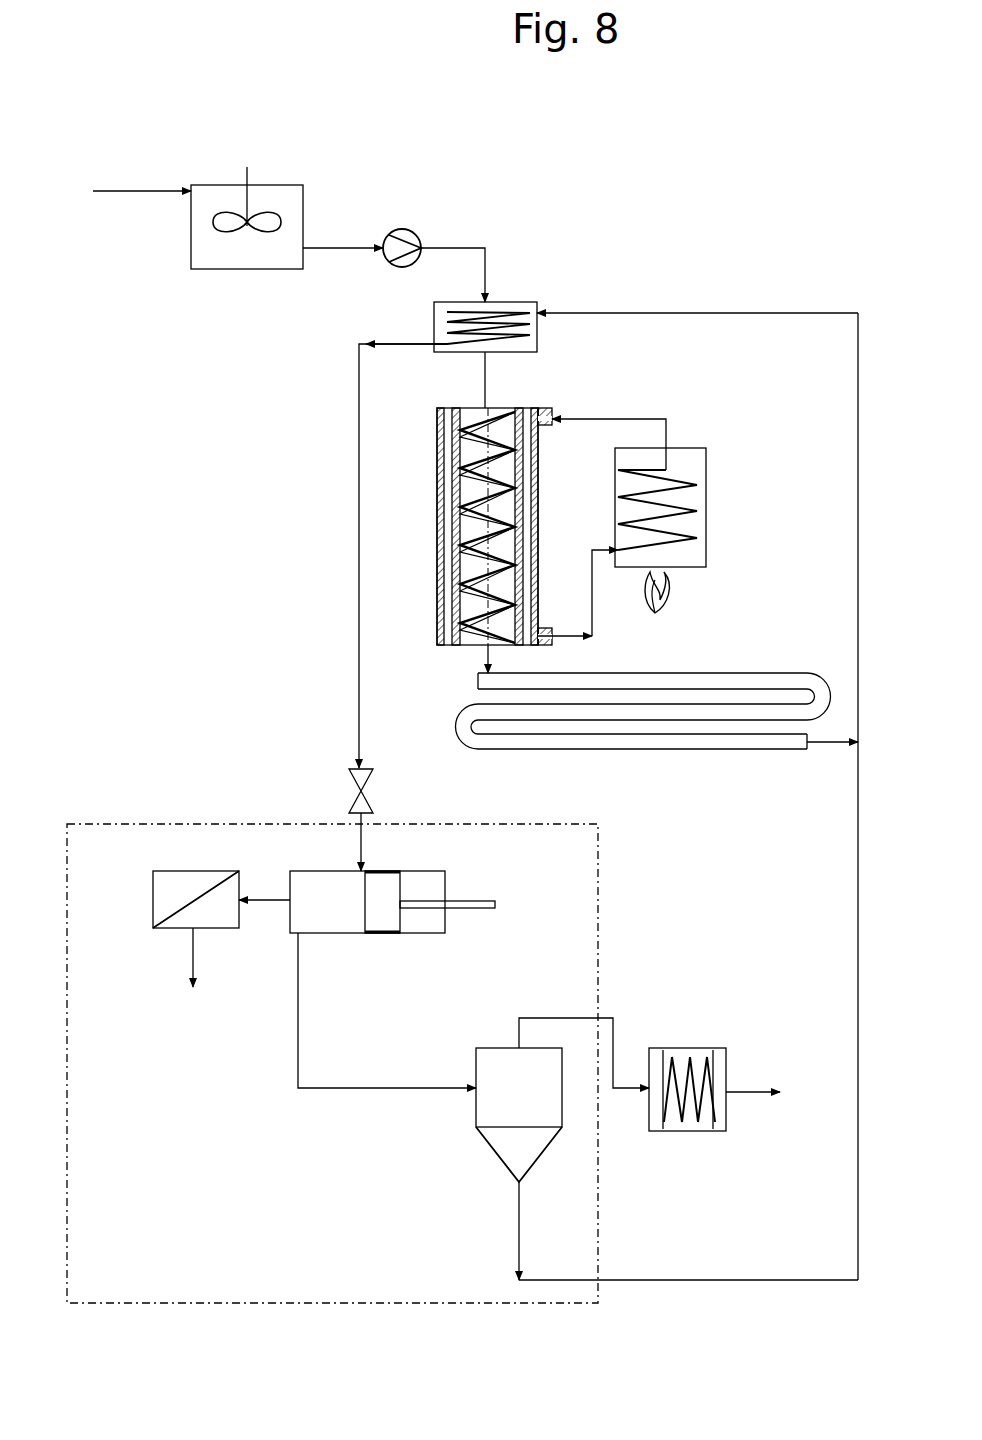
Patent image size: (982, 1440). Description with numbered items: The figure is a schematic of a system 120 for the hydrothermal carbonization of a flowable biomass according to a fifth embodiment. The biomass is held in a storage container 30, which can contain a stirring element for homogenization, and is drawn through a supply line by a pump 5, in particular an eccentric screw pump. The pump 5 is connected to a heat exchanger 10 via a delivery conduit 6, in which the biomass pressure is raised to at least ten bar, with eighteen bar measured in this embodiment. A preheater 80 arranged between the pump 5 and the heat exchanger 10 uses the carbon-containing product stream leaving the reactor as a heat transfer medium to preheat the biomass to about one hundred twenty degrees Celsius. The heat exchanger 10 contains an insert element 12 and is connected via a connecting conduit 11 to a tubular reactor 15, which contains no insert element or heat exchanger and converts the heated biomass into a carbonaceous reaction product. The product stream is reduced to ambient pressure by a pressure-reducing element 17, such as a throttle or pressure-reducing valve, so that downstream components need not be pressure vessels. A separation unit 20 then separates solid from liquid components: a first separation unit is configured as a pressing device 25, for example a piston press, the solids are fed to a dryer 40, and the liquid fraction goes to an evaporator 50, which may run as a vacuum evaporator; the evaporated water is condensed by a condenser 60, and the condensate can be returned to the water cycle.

The system 120 is at (383, 118).
The storage container 30 is at (210, 262).
The pump 5 is at (400, 247).
The delivery conduit 6 is at (458, 247).
The preheater 80 is at (540, 340).
The heat exchanger 10 is at (484, 521).
The insert element 12 is at (463, 425).
The connecting conduit 11 is at (483, 658).
The tubular reactor 15 is at (528, 742).
The pressure-reducing element 17 is at (348, 775).
The separation unit 20 is at (220, 1307).
The pressing device 25 is at (437, 915).
The dryer 40 is at (190, 952).
The evaporator 50 is at (503, 1145).
The condenser 60 is at (685, 1052).